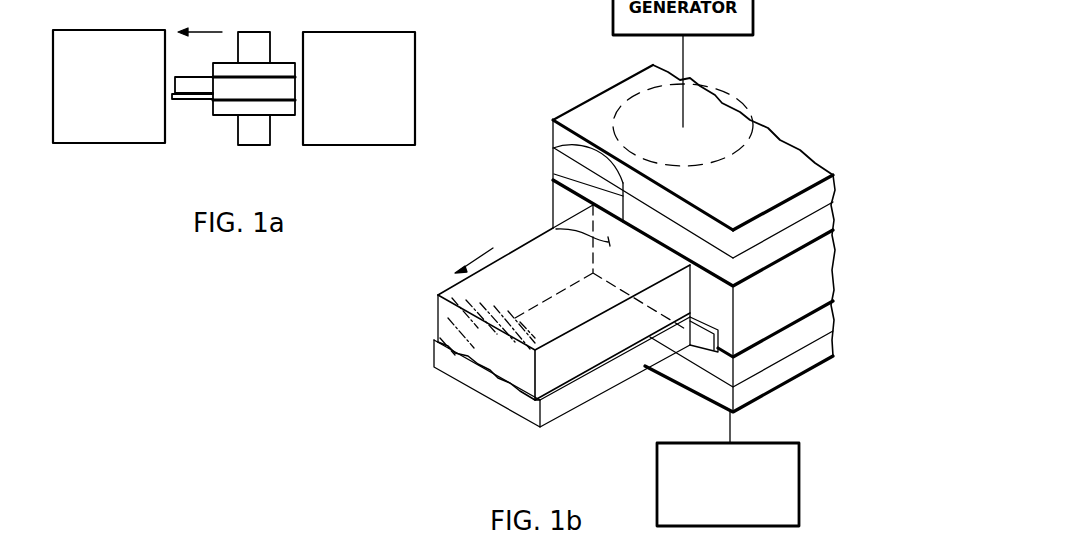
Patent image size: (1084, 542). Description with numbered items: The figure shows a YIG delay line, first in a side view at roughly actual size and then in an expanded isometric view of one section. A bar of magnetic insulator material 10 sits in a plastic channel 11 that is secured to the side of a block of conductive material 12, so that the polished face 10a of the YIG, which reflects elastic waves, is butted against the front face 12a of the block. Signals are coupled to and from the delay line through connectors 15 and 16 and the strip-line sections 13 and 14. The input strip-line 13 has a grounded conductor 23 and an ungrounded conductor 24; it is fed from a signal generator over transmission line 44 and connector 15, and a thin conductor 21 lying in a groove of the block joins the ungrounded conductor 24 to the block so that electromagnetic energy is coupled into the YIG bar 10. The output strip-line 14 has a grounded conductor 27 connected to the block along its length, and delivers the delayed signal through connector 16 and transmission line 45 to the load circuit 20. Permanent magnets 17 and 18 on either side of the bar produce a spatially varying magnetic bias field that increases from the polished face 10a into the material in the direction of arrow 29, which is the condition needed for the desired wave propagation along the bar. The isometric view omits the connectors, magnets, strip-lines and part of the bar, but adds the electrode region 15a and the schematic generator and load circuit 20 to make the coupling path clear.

In FIG. 1A, the magnetic insulator material 10 is at (195, 77).
In FIG. 1B, the magnetic insulator material 10 is at (452, 286).
In FIG. 1B, the polished face 10a is at (553, 228).
In FIG. 1A, the plastic channel 11 is at (190, 96).
In FIG. 1B, the plastic channel 11 is at (599, 381).
In FIG. 1A, the block of conductive material 12 is at (226, 93).
In FIG. 1B, the block of conductive material 12 is at (822, 260).
In FIG. 1B, the front face 12a is at (567, 211).
In FIG. 1A, the strip-line 13 is at (283, 63).
In FIG. 1B, the strip-line 13 is at (836, 177).
In FIG. 1A, the strip-line 14 is at (283, 117).
In FIG. 1B, the strip-line 14 is at (836, 303).
In FIG. 1A, the connector 15 is at (257, 32).
In FIG. 1B, the electrode region 15a is at (700, 168).
In FIG. 1A, the connector 16 is at (250, 145).
In FIG. 1A, the permanent magnet 17 is at (106, 30).
In FIG. 1A, the permanent magnet 18 is at (363, 32).
In FIG. 1B, the load circuit 20 is at (800, 476).
In FIG. 1B, the thin conductor 21 is at (553, 176).
In FIG. 1B, the grounded conductor 23 is at (766, 267).
In FIG. 1B, the ungrounded conductor 24 is at (553, 148).
In FIG. 1B, the grounded conductor 27 is at (775, 333).
In FIG. 1A, the arrow 29 is at (200, 20).
In FIG. 1B, the arrow 29 is at (473, 257).
In FIG. 1B, the transmission line 44 is at (686, 62).
In FIG. 1B, the transmission line 45 is at (731, 422).